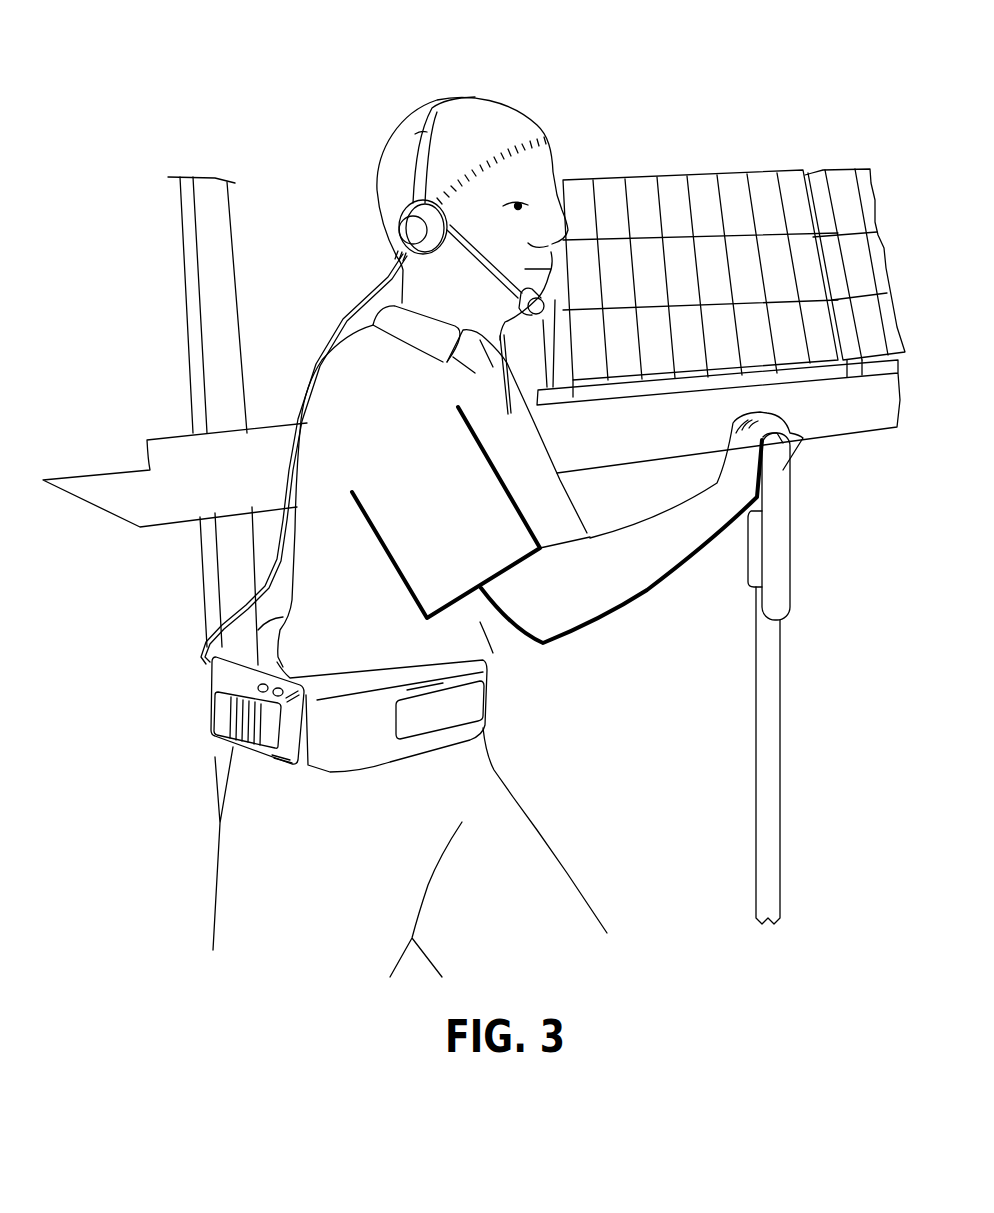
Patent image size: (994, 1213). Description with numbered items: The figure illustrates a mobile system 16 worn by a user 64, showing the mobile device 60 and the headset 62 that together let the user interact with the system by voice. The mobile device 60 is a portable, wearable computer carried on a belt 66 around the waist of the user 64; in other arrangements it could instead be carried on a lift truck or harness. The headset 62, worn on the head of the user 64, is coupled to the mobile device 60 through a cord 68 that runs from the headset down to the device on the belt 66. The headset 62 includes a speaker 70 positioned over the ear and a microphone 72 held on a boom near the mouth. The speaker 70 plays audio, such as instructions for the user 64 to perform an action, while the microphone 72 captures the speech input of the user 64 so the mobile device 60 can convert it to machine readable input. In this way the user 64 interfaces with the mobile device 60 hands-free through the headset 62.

The mobile system 16 is at (258, 64).
The mobile device 60 is at (219, 755).
The headset 62 is at (412, 132).
The user 64 is at (424, 465).
The belt 66 is at (487, 703).
The cord 68 is at (292, 473).
The speaker 70 is at (403, 218).
The microphone 72 is at (516, 303).